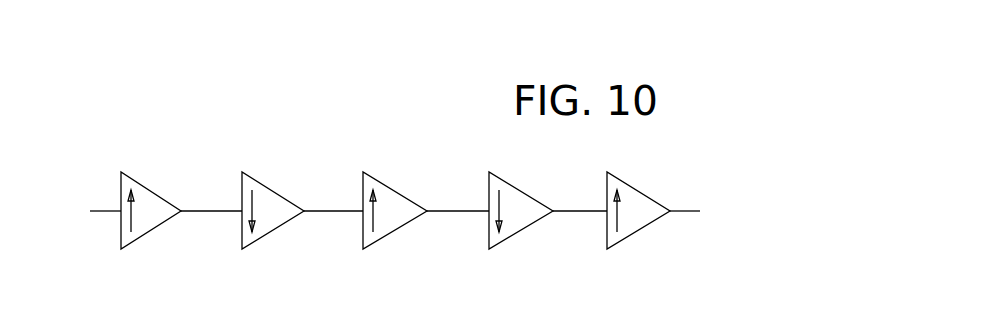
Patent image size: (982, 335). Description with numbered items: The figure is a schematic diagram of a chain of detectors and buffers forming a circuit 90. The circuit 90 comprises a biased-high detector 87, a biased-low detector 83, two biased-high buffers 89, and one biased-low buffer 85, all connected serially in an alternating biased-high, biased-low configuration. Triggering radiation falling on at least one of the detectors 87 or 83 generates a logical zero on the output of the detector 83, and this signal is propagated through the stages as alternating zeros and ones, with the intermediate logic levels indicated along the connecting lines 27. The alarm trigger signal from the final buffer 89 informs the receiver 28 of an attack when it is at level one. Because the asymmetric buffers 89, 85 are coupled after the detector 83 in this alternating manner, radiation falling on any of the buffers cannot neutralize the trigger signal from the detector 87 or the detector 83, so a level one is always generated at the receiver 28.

The signal lines / repeater stages 27 is at (435, 103).
The receiver 28 is at (799, 205).
The biased-low detector 83 is at (272, 188).
The biased-low inverter/buffer 85 is at (520, 187).
The biased-high detector 87 is at (150, 190).
The biased-high inverter/buffer 89 is at (392, 187).
The circuit 90 is at (78, 248).